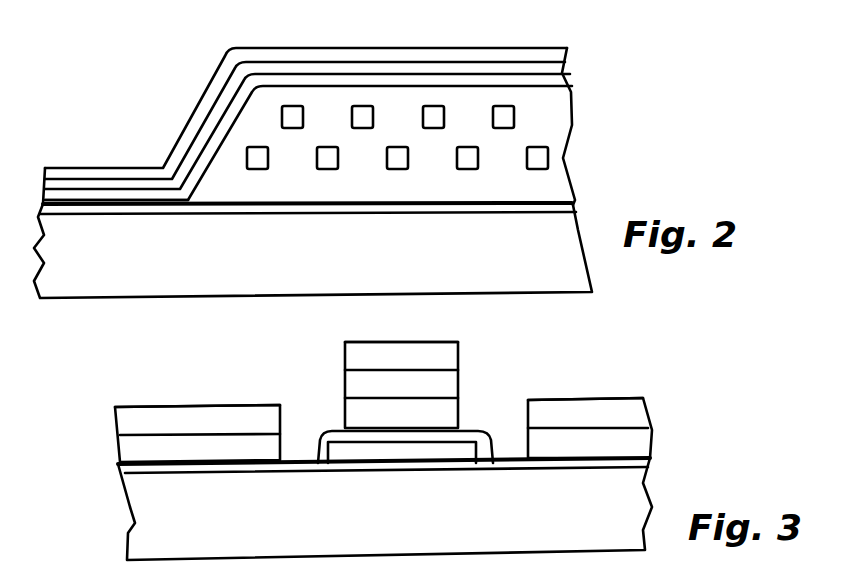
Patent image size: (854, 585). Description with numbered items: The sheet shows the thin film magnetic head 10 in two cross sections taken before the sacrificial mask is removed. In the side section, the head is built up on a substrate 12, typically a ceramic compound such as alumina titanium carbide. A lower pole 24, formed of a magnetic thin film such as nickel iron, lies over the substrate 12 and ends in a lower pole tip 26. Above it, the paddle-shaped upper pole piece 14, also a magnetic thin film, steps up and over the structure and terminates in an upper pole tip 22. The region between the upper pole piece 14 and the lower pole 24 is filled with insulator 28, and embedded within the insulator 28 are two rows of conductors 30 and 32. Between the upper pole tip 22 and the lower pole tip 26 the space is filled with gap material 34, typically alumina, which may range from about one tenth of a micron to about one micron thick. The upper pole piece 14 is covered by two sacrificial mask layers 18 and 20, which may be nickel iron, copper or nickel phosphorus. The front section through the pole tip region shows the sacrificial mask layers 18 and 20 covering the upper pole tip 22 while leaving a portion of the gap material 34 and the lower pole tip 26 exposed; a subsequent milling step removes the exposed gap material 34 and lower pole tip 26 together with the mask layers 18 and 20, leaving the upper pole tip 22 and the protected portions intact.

In FIG. 2, the thin film magnetic head 10 is at (140, 101).
In FIG. 2, the substrate 12 is at (90, 296).
In FIG. 3, the substrate 12 is at (622, 520).
In FIG. 2, the upper pole piece 14 is at (562, 80).
In FIG. 2, the sacrificial mask layer 18 is at (557, 63).
In FIG. 3, the sacrificial mask layer 18 is at (227, 447).
In FIG. 2, the sacrificial mask layer 20 is at (220, 66).
In FIG. 3, the sacrificial mask layer 20 is at (147, 422).
In FIG. 2, the upper pole tip 22 is at (131, 197).
In FIG. 3, the upper pole tip 22 is at (442, 408).
In FIG. 2, the lower pole 24 is at (488, 212).
In FIG. 2, the lower pole tip 26 is at (142, 213).
In FIG. 3, the lower pole tip 26 is at (348, 462).
In FIG. 2, the insulator 28 is at (552, 115).
In FIG. 2, the conductors 30 is at (258, 168).
In FIG. 2, the conductors 32 is at (296, 112).
In FIG. 2, the gap material 34 is at (96, 200).
In FIG. 3, the gap material 34 is at (118, 470).